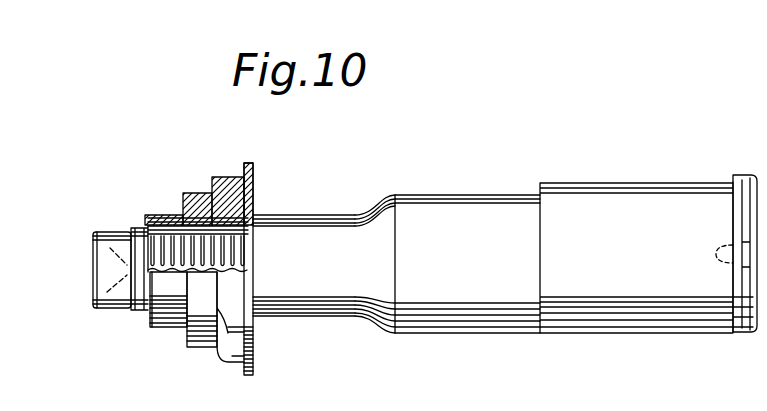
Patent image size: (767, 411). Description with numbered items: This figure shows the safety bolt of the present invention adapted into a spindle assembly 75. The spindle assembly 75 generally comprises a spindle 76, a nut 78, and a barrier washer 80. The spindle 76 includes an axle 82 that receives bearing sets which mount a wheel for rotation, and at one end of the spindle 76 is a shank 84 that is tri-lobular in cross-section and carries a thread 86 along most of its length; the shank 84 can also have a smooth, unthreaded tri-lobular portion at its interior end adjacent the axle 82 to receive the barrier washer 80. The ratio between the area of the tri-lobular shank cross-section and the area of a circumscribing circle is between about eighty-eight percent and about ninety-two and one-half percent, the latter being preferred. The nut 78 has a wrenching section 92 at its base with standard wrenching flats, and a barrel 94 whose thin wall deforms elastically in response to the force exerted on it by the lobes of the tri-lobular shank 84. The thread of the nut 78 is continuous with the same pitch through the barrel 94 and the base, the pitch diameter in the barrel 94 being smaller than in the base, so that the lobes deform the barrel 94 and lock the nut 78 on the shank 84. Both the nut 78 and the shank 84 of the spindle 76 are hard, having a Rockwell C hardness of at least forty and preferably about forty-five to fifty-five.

The spindle assembly 75 is at (505, 256).
The spindle 76 is at (373, 337).
The nut 78 is at (147, 338).
The barrier washer 80 is at (260, 358).
The axle 82 is at (483, 197).
The shank 84 is at (138, 227).
The thread 86 is at (131, 232).
The wrenching section 92 is at (232, 352).
The barrel 94 is at (175, 316).